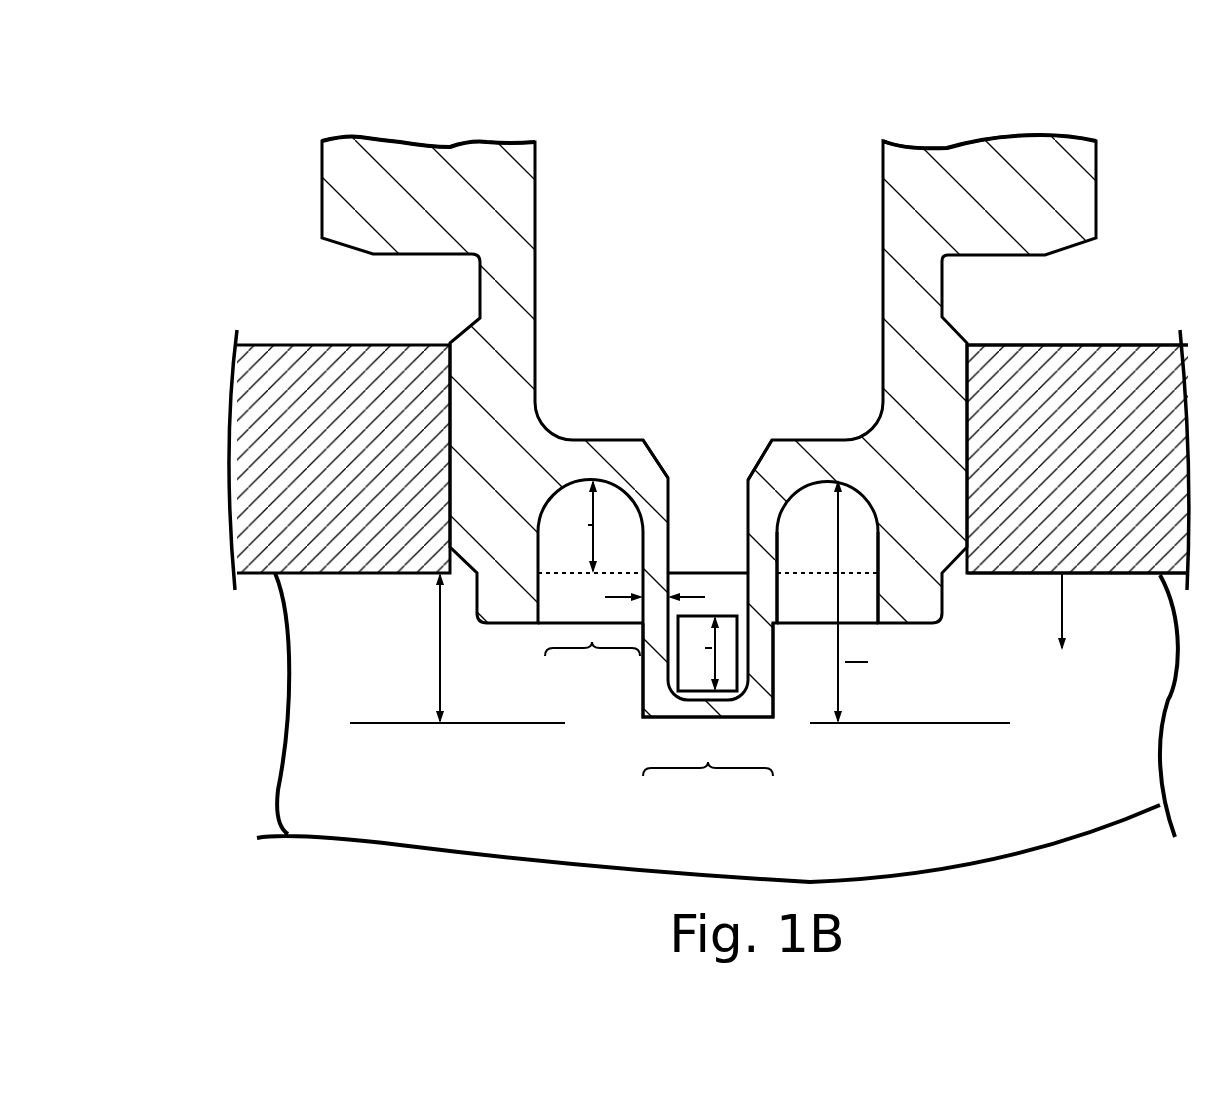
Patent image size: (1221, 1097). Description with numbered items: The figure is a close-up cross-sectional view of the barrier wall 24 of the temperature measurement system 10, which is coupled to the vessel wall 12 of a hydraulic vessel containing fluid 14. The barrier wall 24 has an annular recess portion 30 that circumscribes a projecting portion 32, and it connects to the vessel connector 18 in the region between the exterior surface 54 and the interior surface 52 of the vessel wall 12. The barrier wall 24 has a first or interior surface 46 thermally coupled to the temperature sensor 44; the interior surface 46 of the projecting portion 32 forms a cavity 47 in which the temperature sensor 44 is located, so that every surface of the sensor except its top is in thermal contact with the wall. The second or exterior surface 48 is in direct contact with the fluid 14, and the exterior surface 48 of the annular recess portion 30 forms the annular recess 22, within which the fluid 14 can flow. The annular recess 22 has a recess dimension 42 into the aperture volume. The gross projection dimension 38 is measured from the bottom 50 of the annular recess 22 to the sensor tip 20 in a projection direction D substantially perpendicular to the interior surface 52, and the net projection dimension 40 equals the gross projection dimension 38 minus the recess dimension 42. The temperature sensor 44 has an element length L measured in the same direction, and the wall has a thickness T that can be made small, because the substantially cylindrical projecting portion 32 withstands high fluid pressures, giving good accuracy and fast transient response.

The temperature measurement system 10 is at (1147, 123).
The vessel wall 12 is at (1115, 382).
The fluid 14 is at (717, 727).
The vessel connector 18 is at (438, 422).
The sensor tip 20 is at (689, 722).
The annular recess 22 is at (822, 598).
The barrier wall 24 is at (770, 472).
The annular recess portion 30 is at (592, 662).
The projecting portion 32 is at (708, 784).
The gross projection dimension 38 is at (910, 601).
The net projection dimension 40 is at (438, 648).
The recess dimension 42 is at (576, 526).
The temperature sensor 44 is at (732, 674).
The interior surface 46 is at (742, 525).
The cavity 47 is at (707, 506).
The exterior surface 48 is at (798, 498).
The bottom of annular recess 50 is at (600, 470).
The interior surface of vessel wall 52 is at (996, 588).
The exterior surface of vessel wall 54 is at (1085, 336).